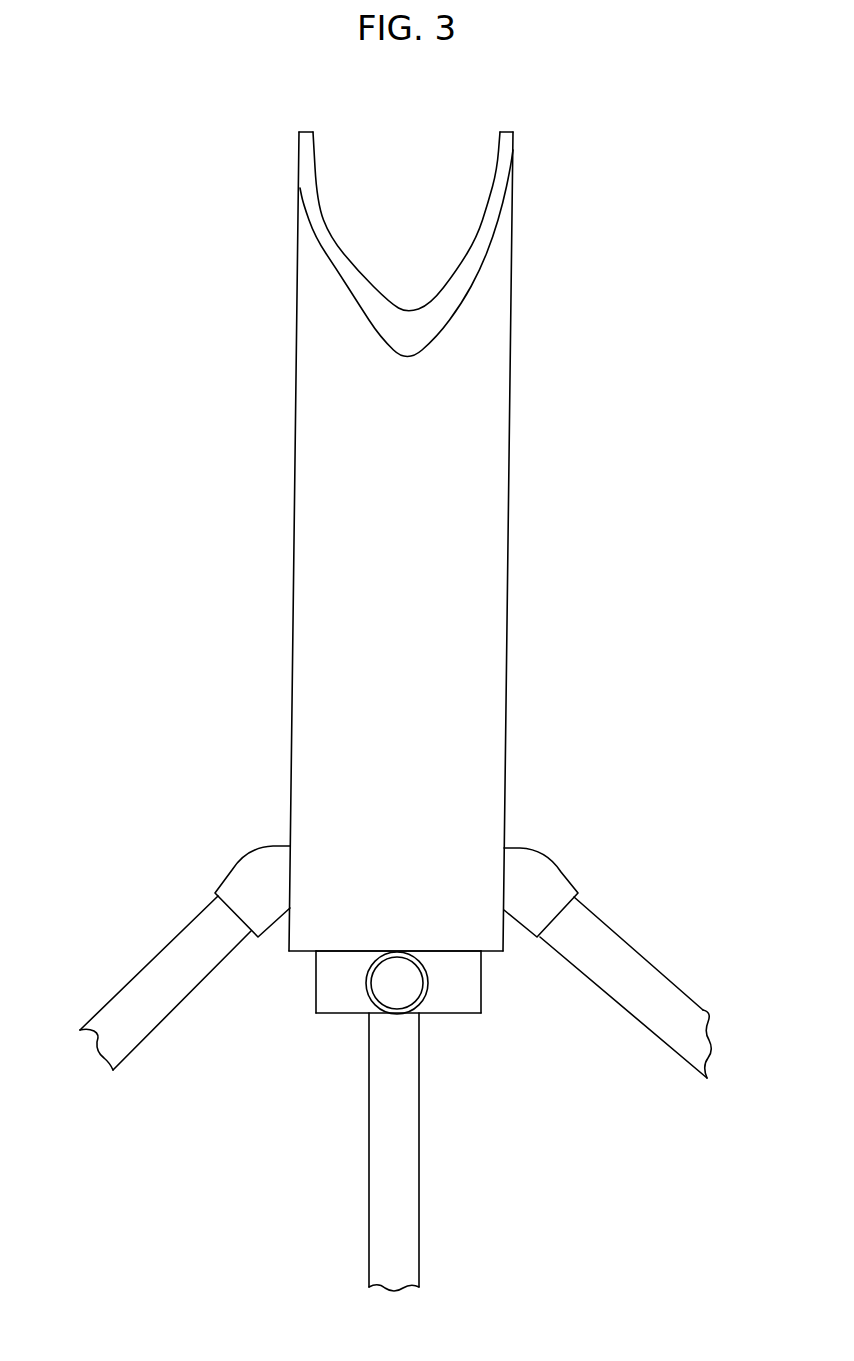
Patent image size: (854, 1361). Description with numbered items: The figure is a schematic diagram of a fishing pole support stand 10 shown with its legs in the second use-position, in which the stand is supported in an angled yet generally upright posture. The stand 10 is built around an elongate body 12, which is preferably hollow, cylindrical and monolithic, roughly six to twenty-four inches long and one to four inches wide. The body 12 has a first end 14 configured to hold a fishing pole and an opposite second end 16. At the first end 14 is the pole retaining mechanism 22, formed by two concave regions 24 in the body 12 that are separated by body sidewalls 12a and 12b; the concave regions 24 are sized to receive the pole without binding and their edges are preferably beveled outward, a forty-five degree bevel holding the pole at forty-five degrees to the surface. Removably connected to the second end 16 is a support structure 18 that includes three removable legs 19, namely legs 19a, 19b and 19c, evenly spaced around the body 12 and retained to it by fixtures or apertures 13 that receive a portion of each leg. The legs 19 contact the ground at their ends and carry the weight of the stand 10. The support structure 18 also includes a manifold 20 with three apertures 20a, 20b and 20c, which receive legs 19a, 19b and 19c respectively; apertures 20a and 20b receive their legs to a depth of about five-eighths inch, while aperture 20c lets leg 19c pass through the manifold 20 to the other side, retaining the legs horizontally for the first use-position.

The support stand 10 is at (563, 364).
The elongate body 12 is at (509, 610).
The body sidewall 12a is at (299, 193).
The body sidewall 12b is at (513, 225).
The fixtures or apertures 13 is at (263, 875).
The first end 14 is at (507, 132).
The second end 16 is at (299, 952).
The support structure 18 is at (467, 1187).
The legs 19 is at (173, 938).
The leg 19a is at (107, 1007).
The leg 19b is at (657, 967).
The leg 19c is at (369, 1226).
The manifold 20 is at (457, 1015).
The aperture 20a is at (482, 995).
The aperture 20b is at (315, 1000).
The aperture 20c is at (370, 995).
The pole retaining mechanism 22 is at (477, 217).
The concave regions 24 is at (332, 208).